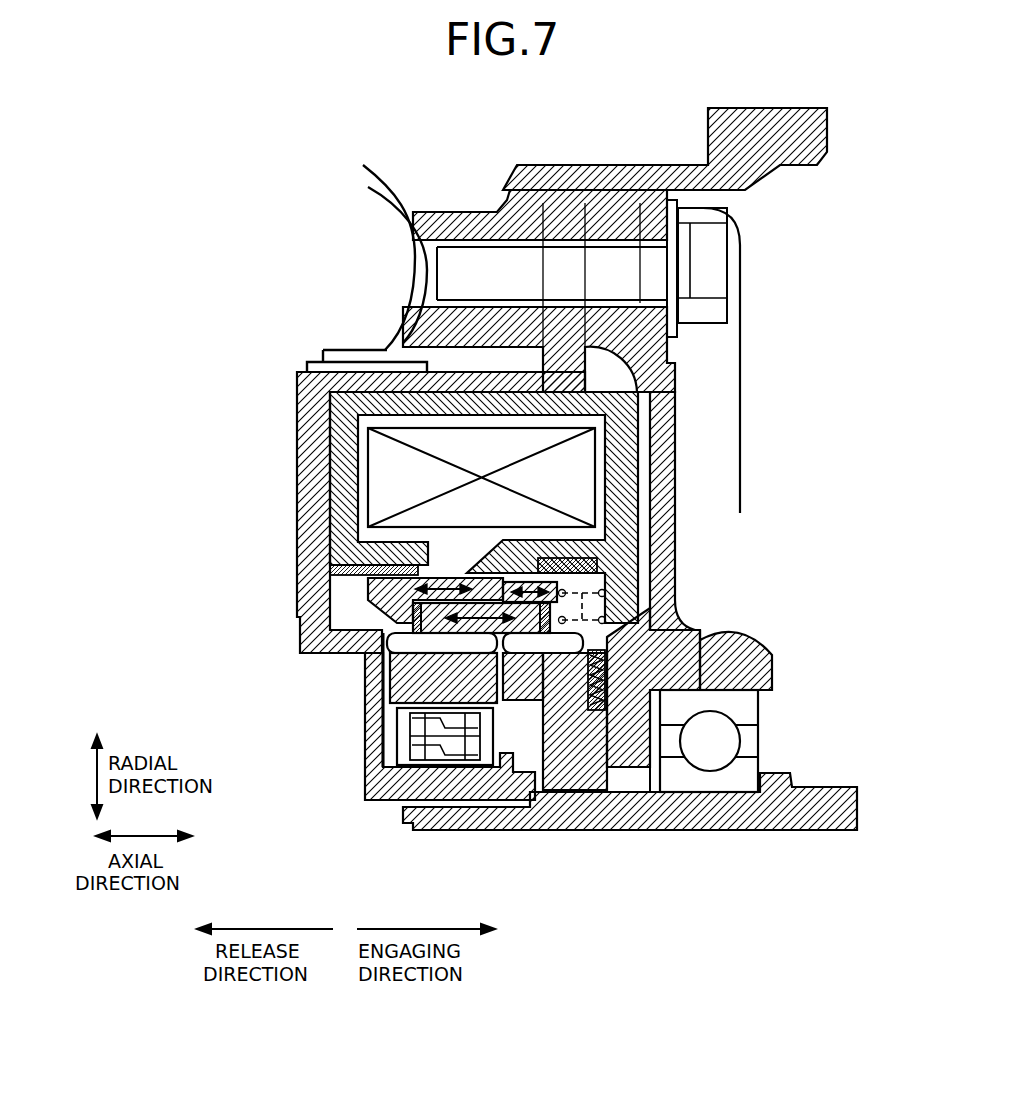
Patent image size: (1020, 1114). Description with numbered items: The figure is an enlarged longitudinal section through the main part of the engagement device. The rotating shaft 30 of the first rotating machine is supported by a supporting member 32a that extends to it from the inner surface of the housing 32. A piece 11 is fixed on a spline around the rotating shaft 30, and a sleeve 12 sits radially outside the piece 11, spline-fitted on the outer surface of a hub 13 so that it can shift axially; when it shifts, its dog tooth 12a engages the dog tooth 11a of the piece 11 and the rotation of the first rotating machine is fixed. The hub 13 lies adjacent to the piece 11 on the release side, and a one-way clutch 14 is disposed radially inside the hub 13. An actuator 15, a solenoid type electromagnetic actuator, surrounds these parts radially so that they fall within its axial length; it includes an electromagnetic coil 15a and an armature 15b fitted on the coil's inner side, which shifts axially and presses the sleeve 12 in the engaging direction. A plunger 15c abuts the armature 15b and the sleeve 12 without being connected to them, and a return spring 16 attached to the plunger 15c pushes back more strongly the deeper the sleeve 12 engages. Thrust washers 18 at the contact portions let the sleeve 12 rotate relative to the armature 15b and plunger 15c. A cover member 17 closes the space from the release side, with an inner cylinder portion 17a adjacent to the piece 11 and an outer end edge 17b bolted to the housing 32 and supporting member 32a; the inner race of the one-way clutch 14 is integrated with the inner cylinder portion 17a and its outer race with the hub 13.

The piece 11 is at (573, 777).
The dog tooth 11a is at (690, 642).
The sleeve 12 is at (405, 614).
The dog tooth 12a is at (398, 653).
The hub 13 is at (415, 680).
The one-way clutch 14 is at (390, 738).
The actuator 15 is at (640, 448).
The electromagnetic coil 15a is at (580, 484).
The armature 15b is at (505, 558).
The plunger 15c is at (395, 587).
The return spring 16 is at (645, 600).
The cover member 17 is at (305, 470).
The inner cylinder portion 17a is at (373, 783).
The outer end edge 17b is at (565, 318).
The thrust washer 18 is at (605, 628).
The rotating shaft 30 is at (773, 787).
The housing 32 is at (615, 170).
The supporting member 32a is at (674, 535).